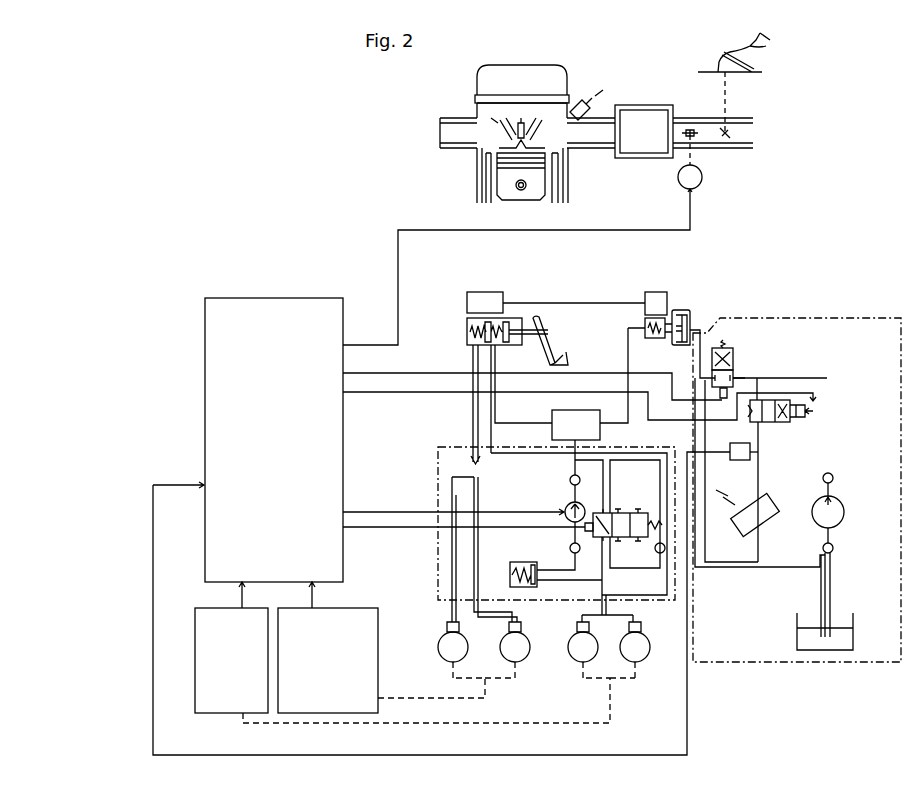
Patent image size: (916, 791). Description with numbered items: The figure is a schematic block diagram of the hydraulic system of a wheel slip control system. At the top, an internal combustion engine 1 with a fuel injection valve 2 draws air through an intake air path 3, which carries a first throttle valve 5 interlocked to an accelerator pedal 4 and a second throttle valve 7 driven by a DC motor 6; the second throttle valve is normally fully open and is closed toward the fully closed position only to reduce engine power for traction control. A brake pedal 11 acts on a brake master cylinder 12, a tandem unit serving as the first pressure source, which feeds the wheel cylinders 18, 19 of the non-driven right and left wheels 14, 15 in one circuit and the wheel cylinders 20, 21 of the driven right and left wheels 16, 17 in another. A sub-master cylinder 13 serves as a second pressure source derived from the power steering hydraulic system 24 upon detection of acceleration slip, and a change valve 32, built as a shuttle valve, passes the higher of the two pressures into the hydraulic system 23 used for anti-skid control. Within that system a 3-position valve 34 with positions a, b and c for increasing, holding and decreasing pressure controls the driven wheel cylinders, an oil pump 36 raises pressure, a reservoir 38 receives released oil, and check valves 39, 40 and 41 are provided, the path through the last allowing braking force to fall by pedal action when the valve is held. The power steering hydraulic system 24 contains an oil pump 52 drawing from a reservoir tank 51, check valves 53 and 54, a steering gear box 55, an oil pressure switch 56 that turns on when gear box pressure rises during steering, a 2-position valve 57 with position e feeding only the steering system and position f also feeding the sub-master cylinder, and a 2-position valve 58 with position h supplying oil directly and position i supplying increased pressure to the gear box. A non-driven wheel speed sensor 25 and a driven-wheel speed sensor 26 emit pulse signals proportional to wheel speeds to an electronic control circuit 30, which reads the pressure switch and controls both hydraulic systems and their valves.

The internal combustion engine 1 is at (540, 58).
The fuel injection valve 2 is at (592, 104).
The intake air path 3 is at (743, 116).
The accelerator pedal 4 is at (712, 59).
The first throttle valve 5 is at (727, 140).
The DC motor 6 is at (702, 181).
The second throttle valve 7 is at (690, 122).
The brake pedal 11 is at (558, 345).
The brake master cylinder 12 is at (473, 292).
The sub-master cylinder 13 is at (667, 300).
The non-driven right wheel 14 is at (438, 642).
The non-driven left wheel 15 is at (500, 642).
The driven right wheel 16 is at (569, 642).
The driven left wheel 17 is at (654, 634).
The wheel cylinder 18 is at (447, 625).
The wheel cylinder 19 is at (527, 620).
The wheel cylinder 20 is at (577, 627).
The wheel cylinder 21 is at (641, 626).
The hydraulic system 23 is at (445, 447).
The power steering hydraulic system 24 is at (830, 316).
The non-driven wheel speed sensor 25 is at (375, 607).
The driven-wheel speed sensor 26 is at (195, 613).
The electronic control circuit 30 is at (295, 298).
The change valve 32 is at (552, 412).
The 3-position valve 34 is at (632, 513).
The oil pump 36 is at (566, 506).
The reservoir 38 is at (510, 562).
The check valve 39 is at (570, 478).
The check valve 40 is at (570, 547).
The check valve 41 is at (665, 554).
The reservoir tank 51 is at (797, 630).
The oil pump 52 is at (843, 505).
The check valve 53 is at (833, 476).
The check valve 54 is at (835, 548).
The steering gear box 55 is at (770, 505).
The oil pressure switch 56 is at (731, 447).
The 2-position valve 57 is at (736, 350).
The 2-position valve 58 is at (785, 425).
The position a is at (598, 539).
The position b is at (621, 551).
The position c is at (640, 551).
The position e is at (736, 374).
The position f is at (736, 360).
The position h is at (753, 420).
The position i is at (795, 420).